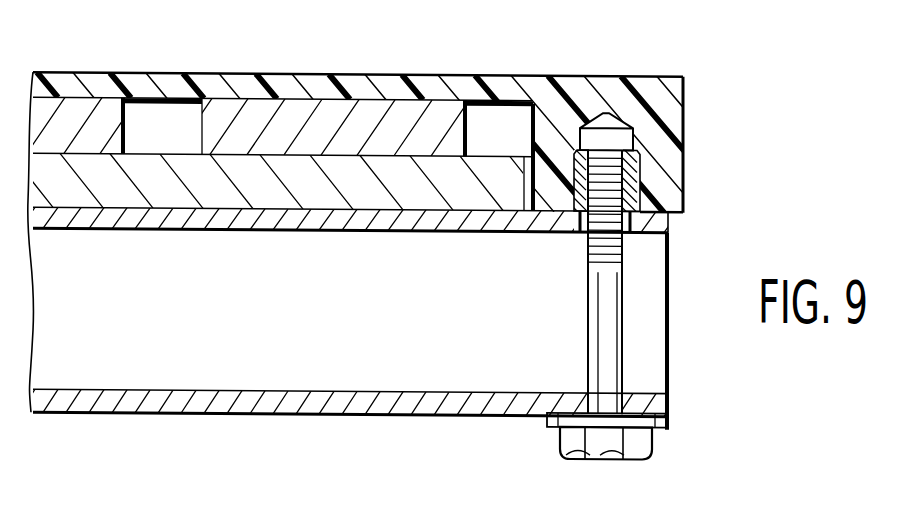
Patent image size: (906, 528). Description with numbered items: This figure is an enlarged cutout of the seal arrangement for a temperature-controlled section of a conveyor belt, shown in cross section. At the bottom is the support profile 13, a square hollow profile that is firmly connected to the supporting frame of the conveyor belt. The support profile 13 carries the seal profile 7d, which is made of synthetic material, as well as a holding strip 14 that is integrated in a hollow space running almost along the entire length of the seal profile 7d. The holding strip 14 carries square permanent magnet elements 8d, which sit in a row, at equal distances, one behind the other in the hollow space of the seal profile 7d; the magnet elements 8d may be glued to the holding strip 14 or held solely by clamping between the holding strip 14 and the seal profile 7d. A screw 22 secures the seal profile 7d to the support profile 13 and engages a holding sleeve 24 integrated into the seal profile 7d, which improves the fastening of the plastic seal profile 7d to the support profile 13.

The seal profile 7d is at (683, 94).
The permanent magnet element 8d is at (76, 113).
The holding strip 14 is at (283, 212).
The support profile 13 is at (181, 400).
The screw 22 is at (627, 357).
The holding sleeve 24 is at (683, 183).